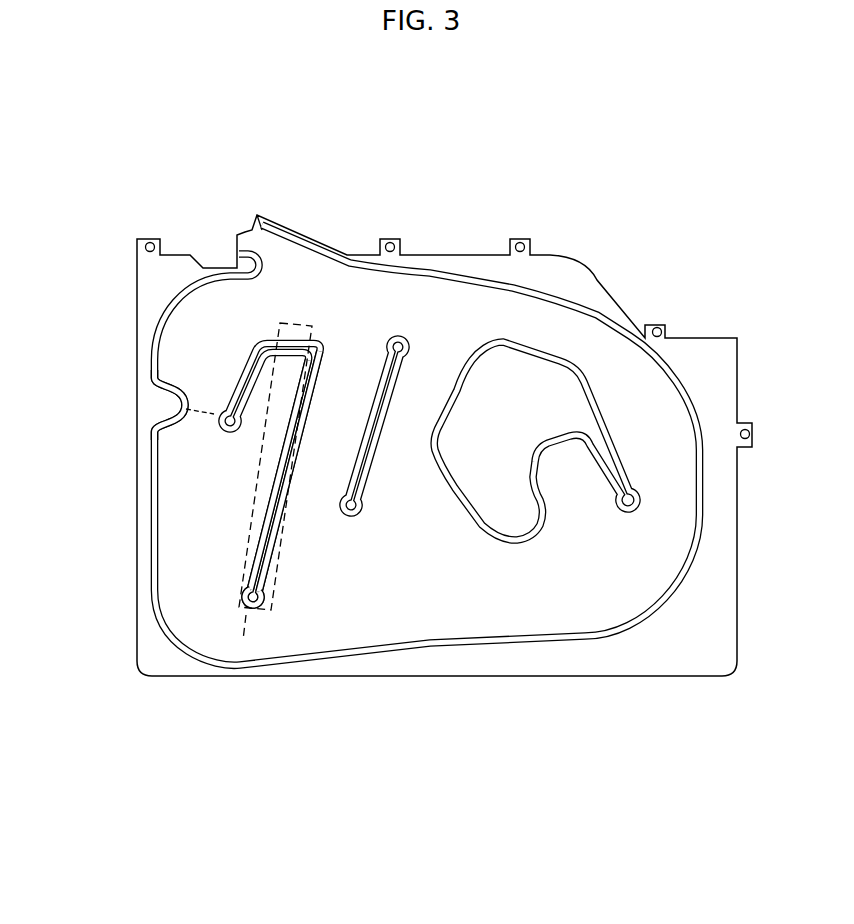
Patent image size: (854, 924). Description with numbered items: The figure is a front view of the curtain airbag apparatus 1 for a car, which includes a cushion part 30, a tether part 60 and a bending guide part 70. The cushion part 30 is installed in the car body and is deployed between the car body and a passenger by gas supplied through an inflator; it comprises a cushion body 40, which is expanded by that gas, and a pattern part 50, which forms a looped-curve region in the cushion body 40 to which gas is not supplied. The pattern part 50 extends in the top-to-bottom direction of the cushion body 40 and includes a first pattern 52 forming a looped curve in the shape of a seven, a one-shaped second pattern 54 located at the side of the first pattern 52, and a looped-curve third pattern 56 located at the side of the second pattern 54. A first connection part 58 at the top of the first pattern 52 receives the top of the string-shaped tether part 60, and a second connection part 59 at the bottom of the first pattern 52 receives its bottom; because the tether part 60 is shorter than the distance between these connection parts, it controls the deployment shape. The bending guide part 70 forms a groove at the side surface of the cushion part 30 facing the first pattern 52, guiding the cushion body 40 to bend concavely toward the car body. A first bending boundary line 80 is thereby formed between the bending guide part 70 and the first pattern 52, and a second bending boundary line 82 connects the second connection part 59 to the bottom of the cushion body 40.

The curtain airbag apparatus 1 is at (476, 192).
The cushion part 30 is at (359, 238).
The cushion body 40 is at (488, 608).
The pattern part 50 is at (255, 764).
The first pattern 52 is at (266, 601).
The second pattern 54 is at (352, 507).
The third pattern 56 is at (508, 522).
The first connection part 58 is at (297, 327).
The second connection part 59 is at (252, 591).
The tether part 60 is at (253, 487).
The bending guide part 70 is at (167, 403).
The first bending boundary line 80 is at (205, 413).
The second bending boundary line 82 is at (248, 631).